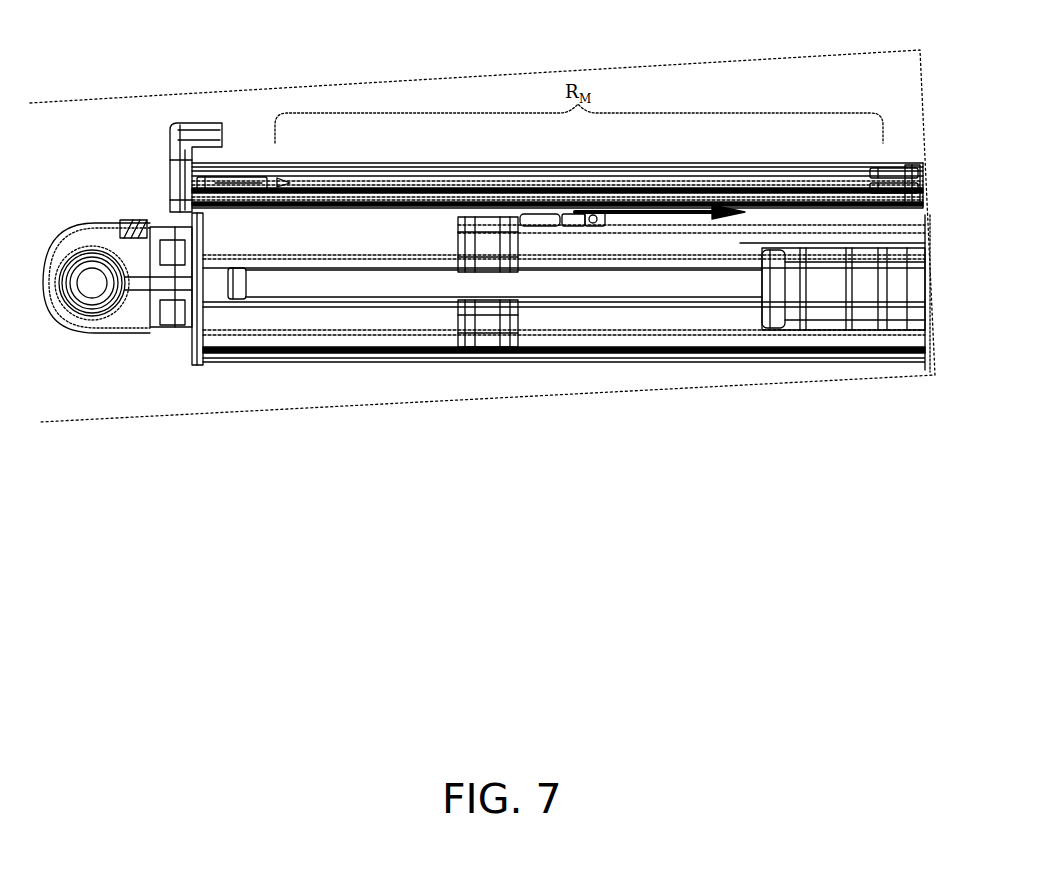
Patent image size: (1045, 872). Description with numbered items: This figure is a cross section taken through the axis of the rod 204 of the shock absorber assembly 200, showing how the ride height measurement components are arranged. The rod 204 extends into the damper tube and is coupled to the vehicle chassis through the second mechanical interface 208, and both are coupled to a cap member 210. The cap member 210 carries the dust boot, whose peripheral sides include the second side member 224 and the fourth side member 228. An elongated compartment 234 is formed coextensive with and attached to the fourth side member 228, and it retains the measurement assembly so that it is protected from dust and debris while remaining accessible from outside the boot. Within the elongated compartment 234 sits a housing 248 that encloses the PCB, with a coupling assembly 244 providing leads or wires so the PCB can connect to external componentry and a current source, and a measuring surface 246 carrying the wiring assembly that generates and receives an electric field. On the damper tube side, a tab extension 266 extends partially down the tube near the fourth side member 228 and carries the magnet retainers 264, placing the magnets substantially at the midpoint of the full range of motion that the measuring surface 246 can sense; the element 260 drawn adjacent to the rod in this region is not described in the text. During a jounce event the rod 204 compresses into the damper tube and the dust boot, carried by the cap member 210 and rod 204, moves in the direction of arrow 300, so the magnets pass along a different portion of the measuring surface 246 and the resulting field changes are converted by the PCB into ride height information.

The shock absorber assembly 200 is at (802, 58).
The rod 204 is at (287, 280).
The second mechanical interface 208 is at (93, 315).
The cap member 210 is at (186, 342).
The second side member 224 is at (738, 362).
The fourth side member 228 is at (843, 213).
The elongated compartment 234 is at (258, 165).
The coupling assembly 244 is at (218, 182).
The measuring surface 246 is at (672, 178).
The housing 248 is at (390, 170).
The bearing 260 is at (465, 328).
The magnet retainers 264 is at (571, 230).
The tab extension 266 is at (592, 220).
The arrow 300 is at (693, 214).